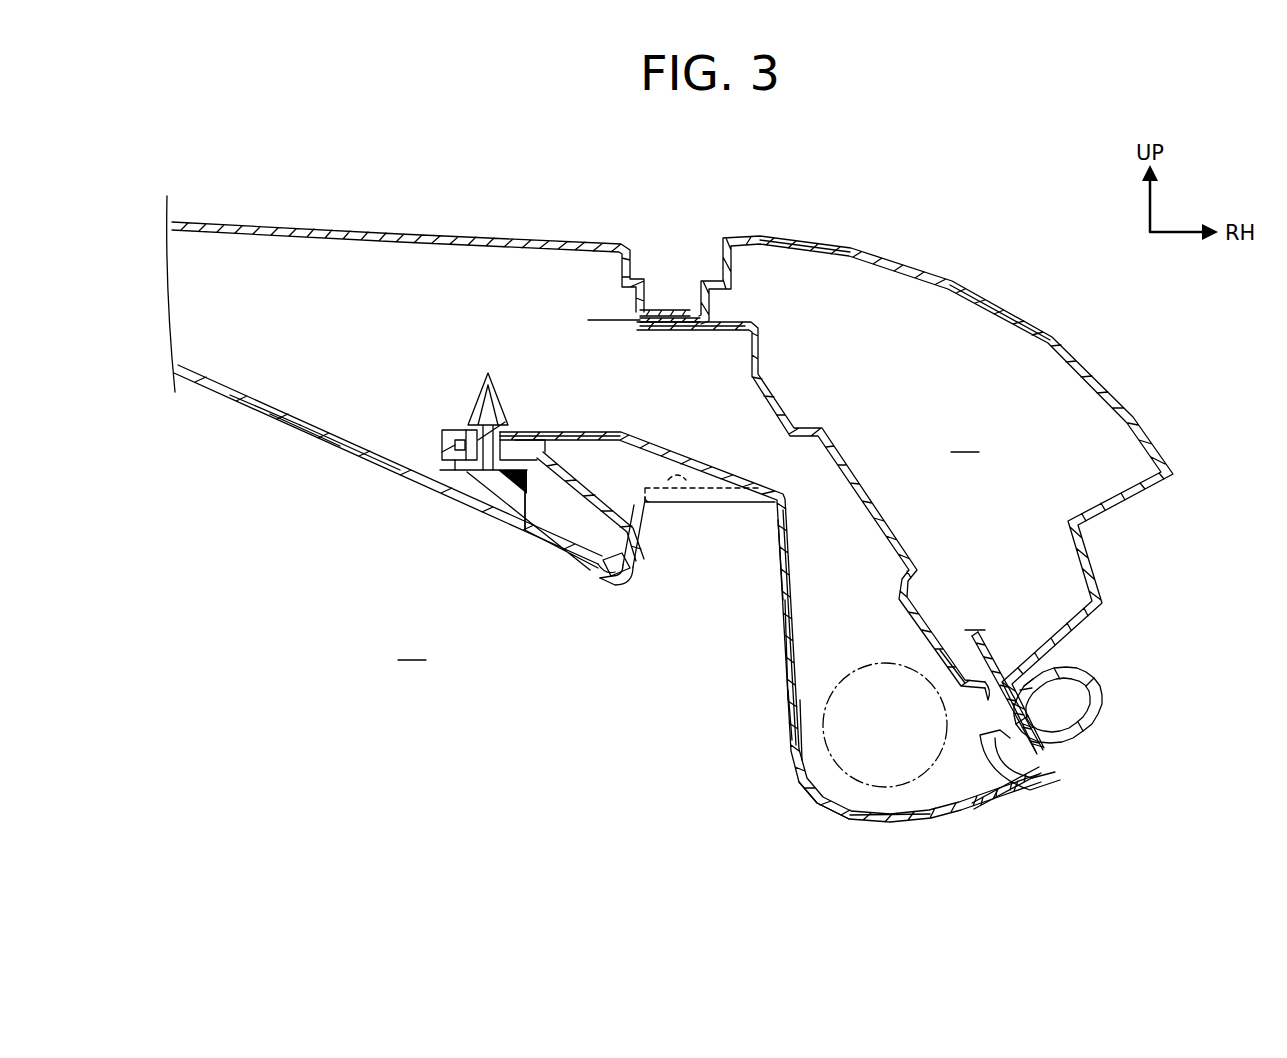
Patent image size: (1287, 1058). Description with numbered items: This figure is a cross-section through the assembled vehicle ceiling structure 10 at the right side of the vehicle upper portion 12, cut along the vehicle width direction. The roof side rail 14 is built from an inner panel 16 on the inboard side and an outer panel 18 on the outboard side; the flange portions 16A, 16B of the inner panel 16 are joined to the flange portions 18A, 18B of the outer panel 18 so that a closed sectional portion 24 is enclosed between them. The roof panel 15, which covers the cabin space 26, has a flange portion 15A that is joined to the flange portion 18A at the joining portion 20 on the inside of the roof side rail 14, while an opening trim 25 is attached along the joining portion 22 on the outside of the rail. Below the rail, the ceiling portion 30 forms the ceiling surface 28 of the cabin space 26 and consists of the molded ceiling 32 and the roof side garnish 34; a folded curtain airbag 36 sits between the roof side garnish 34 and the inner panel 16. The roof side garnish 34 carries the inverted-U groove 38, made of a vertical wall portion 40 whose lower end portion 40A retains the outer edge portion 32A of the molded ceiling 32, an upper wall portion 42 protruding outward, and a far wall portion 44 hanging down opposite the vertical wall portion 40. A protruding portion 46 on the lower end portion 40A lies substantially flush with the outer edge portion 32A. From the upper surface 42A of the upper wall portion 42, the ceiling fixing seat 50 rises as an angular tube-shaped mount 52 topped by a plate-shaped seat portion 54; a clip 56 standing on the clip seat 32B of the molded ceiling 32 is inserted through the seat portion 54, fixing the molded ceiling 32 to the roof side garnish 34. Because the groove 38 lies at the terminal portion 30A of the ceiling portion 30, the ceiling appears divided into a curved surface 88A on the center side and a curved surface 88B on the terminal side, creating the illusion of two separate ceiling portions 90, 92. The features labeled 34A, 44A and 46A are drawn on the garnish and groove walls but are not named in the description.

The vehicle ceiling structure 10 is at (668, 711).
The vehicle upper portion 12 is at (952, 268).
The roof side rail 14 is at (1060, 350).
The roof panel 15 is at (425, 233).
The flange portion 15A is at (660, 310).
The inner panel 16 is at (755, 396).
The flange portion 16A is at (676, 333).
The flange portion 16B is at (945, 712).
The outer panel 18 is at (1126, 414).
The flange portion 18A is at (668, 318).
The flange portion 18B is at (1062, 700).
The joining portion 20 is at (614, 316).
The joining portion 22 is at (992, 672).
The closed sectional portion 24 is at (964, 440).
The opening trim 25 is at (1105, 716).
The cabin space 26 is at (411, 648).
The ceiling surface 28 is at (345, 440).
The ceiling portion 30 is at (371, 484).
The terminal portion 30A is at (1036, 792).
The molded ceiling 32 is at (418, 480).
The outer edge portion 32A is at (610, 566).
The clip seat 32B is at (491, 482).
The roof side garnish 34 is at (828, 812).
The bracket bottom flange 34A is at (973, 812).
The airbag 36 is at (848, 693).
The groove 38 is at (722, 614).
The vertical wall portion 40 is at (630, 560).
The lower end portion 40A is at (613, 590).
The upper wall portion 42 is at (733, 504).
The upper surface 42A is at (692, 492).
The far wall portion 44 is at (783, 655).
The bracket bottom wall 44A is at (891, 822).
The protruding portion 46 is at (621, 585).
The hook curl 46A is at (640, 582).
The ceiling fixing seat 50 is at (681, 446).
The mount 52 is at (614, 430).
The seat portion 54 is at (455, 430).
The clip 56 is at (500, 385).
The curved surface 88A is at (289, 422).
The curved surface 88B is at (784, 712).
The ceiling portion 90 is at (262, 398).
The ceiling portion 92 is at (778, 582).